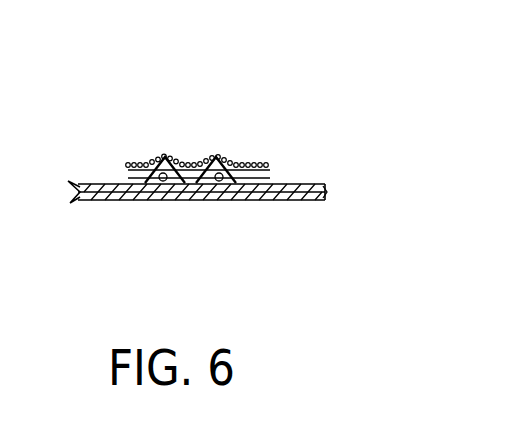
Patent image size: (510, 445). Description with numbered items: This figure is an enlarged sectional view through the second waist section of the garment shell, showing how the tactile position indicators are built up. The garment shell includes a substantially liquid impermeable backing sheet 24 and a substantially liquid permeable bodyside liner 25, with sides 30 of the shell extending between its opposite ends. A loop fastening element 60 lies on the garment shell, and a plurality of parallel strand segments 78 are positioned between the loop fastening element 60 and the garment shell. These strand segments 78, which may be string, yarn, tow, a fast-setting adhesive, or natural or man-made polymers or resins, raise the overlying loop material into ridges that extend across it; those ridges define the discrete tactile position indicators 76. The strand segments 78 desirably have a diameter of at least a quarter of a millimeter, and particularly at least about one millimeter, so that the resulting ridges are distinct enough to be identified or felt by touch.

The backing sheet 24 is at (297, 202).
The bodyside liner 25 is at (88, 183).
The sides 30 is at (325, 192).
The loop fastening element 60 is at (130, 180).
The tactile position indicators 76 is at (215, 158).
The strand segments 78 is at (197, 202).